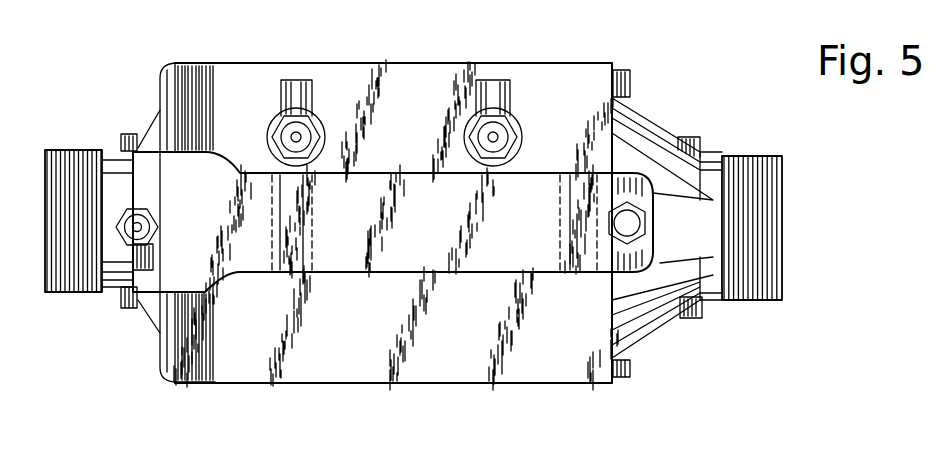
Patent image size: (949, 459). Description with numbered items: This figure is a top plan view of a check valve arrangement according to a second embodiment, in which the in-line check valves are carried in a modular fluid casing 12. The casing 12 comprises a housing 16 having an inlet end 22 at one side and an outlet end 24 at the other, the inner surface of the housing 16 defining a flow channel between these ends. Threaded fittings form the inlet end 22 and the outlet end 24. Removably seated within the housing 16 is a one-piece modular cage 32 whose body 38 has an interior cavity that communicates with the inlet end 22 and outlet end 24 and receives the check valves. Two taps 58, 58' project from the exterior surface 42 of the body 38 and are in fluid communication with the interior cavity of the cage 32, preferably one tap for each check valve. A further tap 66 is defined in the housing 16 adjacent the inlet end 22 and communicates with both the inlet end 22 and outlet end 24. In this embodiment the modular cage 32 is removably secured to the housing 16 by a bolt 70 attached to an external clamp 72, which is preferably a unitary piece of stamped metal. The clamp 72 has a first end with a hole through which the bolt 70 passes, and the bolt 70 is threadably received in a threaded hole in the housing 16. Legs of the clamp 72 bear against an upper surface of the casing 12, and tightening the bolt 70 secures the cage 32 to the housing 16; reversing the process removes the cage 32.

The modular fluid casing 12 is at (132, 80).
The housing 16 is at (643, 343).
The inlet end 22 is at (36, 148).
The outlet end 24 is at (770, 157).
The modular cage 32 is at (222, 62).
The body 38 is at (428, 83).
The exterior surface 42 is at (210, 350).
The tap 58 is at (293, 99).
The tap 58' is at (517, 99).
The tap 66 is at (127, 229).
The bolt 70 is at (644, 245).
The external clamp 72 is at (642, 173).